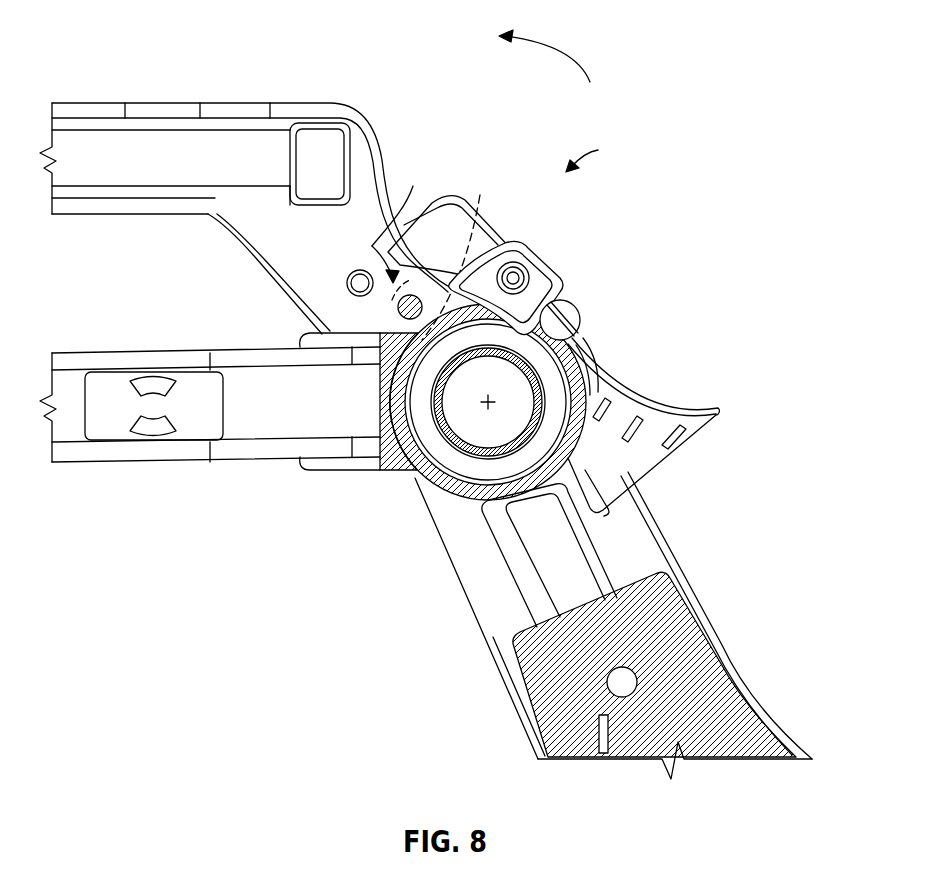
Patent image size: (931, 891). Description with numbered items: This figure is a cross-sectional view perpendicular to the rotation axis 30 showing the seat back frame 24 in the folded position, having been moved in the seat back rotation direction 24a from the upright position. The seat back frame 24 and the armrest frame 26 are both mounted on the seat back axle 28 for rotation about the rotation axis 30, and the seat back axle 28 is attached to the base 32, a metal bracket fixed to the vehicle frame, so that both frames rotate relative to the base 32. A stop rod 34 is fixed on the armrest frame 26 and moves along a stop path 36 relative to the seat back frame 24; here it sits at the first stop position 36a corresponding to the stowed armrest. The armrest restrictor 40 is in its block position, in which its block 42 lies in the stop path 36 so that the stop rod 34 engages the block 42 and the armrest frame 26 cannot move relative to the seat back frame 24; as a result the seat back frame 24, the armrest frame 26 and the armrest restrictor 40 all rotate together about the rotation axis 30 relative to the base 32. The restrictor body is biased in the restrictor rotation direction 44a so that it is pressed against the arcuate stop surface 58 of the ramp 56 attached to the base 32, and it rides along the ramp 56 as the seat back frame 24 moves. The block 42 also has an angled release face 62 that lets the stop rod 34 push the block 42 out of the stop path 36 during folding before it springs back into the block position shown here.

The seat back frame 24 is at (163, 103).
The seat back rotation direction 24a is at (560, 40).
The armrest frame 26 is at (108, 463).
The seat back axle 28 is at (412, 468).
The rotation axis 30 is at (488, 402).
The base 32 is at (708, 650).
The stop rod 34 is at (580, 312).
The stop path 36 is at (431, 249).
The first stop position 36a is at (592, 330).
The armrest restrictor 40 is at (595, 154).
The block 42 is at (514, 262).
The restrictor rotation direction 44a is at (403, 219).
The ramp 56 is at (680, 447).
The stop surface 58 is at (640, 395).
The release face 62 is at (556, 270).